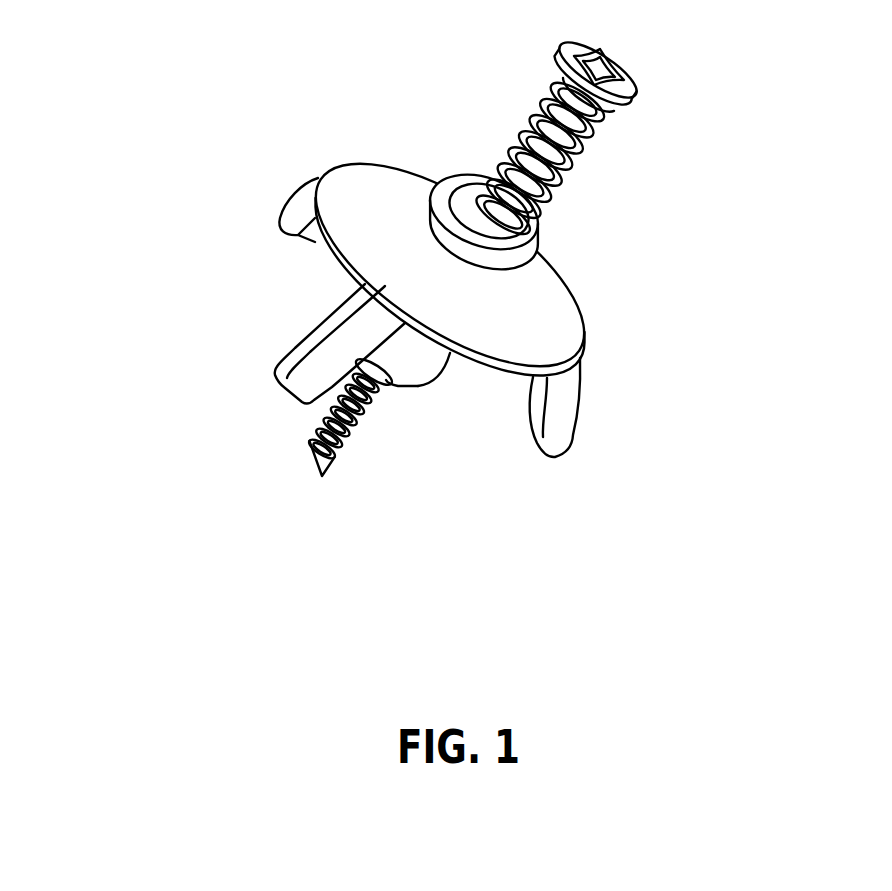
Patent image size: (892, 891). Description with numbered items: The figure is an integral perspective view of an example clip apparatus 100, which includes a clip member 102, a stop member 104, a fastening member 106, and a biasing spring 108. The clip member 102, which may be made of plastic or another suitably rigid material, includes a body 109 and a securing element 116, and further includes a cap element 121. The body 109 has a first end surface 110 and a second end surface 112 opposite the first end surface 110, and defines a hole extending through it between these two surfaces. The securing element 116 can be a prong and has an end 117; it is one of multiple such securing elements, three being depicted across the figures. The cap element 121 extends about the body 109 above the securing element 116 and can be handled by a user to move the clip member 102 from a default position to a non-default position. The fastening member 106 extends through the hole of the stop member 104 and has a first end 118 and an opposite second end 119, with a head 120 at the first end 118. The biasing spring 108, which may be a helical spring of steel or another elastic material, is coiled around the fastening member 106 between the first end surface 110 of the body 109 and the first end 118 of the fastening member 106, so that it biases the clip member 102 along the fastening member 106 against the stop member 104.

The clip apparatus 100 is at (150, 415).
The clip member 102 is at (627, 443).
The stop member 104 is at (405, 388).
The fastening member 106 is at (368, 463).
The biasing spring 108 is at (550, 193).
The body 109 is at (428, 360).
The first end surface 110 is at (533, 238).
The second end surface 112 is at (417, 387).
The securing element 116 is at (307, 363).
The end 117 is at (287, 395).
The first end 118 is at (587, 128).
The second end 119 is at (309, 470).
The head 120 is at (630, 76).
The cap element 121 is at (553, 323).